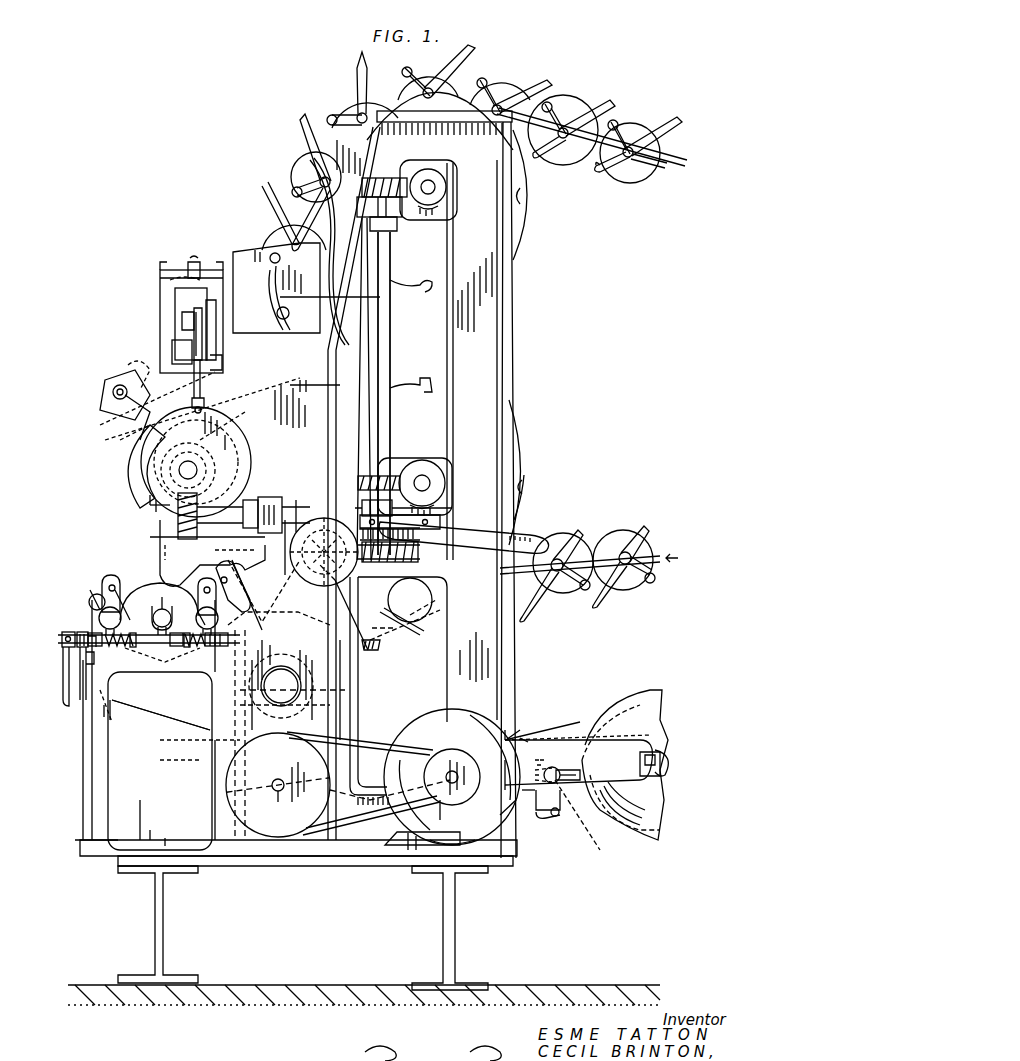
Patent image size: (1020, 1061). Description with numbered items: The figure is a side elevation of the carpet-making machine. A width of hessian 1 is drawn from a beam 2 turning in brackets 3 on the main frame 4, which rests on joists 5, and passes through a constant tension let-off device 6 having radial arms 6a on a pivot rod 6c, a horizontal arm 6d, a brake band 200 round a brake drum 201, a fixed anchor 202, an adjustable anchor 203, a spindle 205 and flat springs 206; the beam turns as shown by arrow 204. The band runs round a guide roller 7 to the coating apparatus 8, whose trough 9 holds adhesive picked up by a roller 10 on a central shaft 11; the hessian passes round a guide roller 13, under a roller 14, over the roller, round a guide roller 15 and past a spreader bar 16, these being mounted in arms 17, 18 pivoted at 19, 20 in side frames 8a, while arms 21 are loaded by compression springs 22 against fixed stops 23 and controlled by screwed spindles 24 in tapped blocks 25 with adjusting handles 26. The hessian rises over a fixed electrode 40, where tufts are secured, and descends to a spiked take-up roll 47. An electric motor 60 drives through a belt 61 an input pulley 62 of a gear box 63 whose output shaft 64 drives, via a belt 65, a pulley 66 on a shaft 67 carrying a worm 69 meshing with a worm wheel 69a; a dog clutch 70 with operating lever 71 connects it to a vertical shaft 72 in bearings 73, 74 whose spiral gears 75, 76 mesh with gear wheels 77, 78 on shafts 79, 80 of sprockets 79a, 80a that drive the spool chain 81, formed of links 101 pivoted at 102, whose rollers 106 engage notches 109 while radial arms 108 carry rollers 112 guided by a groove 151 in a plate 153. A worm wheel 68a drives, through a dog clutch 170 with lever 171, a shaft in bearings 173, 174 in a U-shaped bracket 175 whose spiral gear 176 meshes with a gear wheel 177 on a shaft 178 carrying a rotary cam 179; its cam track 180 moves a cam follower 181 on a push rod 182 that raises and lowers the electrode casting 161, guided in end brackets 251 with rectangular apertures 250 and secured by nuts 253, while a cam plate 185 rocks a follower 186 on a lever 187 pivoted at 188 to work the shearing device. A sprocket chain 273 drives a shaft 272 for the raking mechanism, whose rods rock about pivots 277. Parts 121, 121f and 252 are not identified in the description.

The hessian band 1 is at (92, 473).
The beam 2 is at (160, 630).
The brackets 3 is at (640, 820).
The main frame 4 is at (486, 326).
The joists 5 is at (160, 936).
The constant tension let-off device 6 is at (566, 760).
The radial arm 6a is at (585, 830).
The pivot rod 6c is at (522, 790).
The horizontal arm 6d is at (575, 762).
The guide roller 7 is at (112, 722).
The coating apparatus 8 is at (92, 585).
The side frames 8a is at (158, 624).
The trough 9 is at (156, 660).
The roller 10 is at (140, 590).
The central shaft 11 is at (164, 608).
The guide roller 13 is at (98, 595).
The roller 14 is at (120, 590).
The guide roller 15 is at (222, 553).
The spreader bar 16 is at (236, 578).
The arm 17 is at (122, 595).
The arm 18 is at (240, 596).
The pivot 19 is at (100, 613).
The pivot 20 is at (262, 622).
The arms 21 is at (110, 643).
The compression springs 22 is at (128, 650).
The fixed stops 23 is at (150, 648).
The screwed spindles 24 is at (88, 665).
The tapped blocks 25 is at (93, 633).
The adjusting handles 26 is at (90, 700).
The fixed electrode 40 is at (286, 368).
The take-up roll 47 is at (120, 440).
The electric motor 60 is at (460, 720).
The belt 61 is at (413, 745).
The input pulley 62 is at (245, 798).
The variable speed gear box 63 is at (325, 680).
The output shaft 64 is at (330, 705).
The belt 65 is at (380, 646).
The pulley 66 is at (383, 610).
The shaft 67 is at (405, 618).
The worm wheel 68a is at (362, 468).
The worm 69 is at (286, 472).
The worm wheel 69a is at (425, 556).
The dog clutch 70 is at (420, 535).
The operating lever 71 is at (530, 540).
The vertical shaft 72 is at (383, 345).
The bearing 73 is at (450, 512).
The bearing 74 is at (388, 212).
The spiral gear wheel 75 is at (395, 480).
The spiral gear wheel 76 is at (390, 180).
The gear wheel 77 is at (445, 487).
The gear wheel 78 is at (432, 172).
The shaft 79 is at (432, 482).
The sprocket 79a is at (515, 458).
The shaft 80 is at (433, 187).
The sprocket 80a is at (516, 228).
The spool chain 81 is at (662, 556).
The links 101 is at (596, 165).
The pivots 102 is at (628, 158).
The roller 106 is at (362, 118).
The radial arm 108 is at (630, 125).
The notches 109 is at (520, 200).
The roller 112 is at (550, 127).
The arm 121 is at (652, 135).
The arm 121f is at (282, 195).
The guide groove 151 is at (330, 296).
The plate 153 is at (313, 258).
The casting 161 is at (178, 298).
The dog clutch 170 is at (304, 445).
The lever 171 is at (335, 645).
The bearing 173 is at (165, 540).
The bearing 174 is at (265, 500).
The U-shaped bracket 175 is at (248, 520).
The spiral gear wheel 176 is at (178, 512).
The gear wheel 177 is at (196, 470).
The shaft 178 is at (216, 523).
The rotary cam 179 is at (290, 385).
The cam track 180 is at (130, 478).
The cam follower 181 is at (245, 412).
The push rod 182 is at (192, 258).
The cam plate 185 is at (160, 505).
The rotary follower 186 is at (232, 385).
The lever 187 is at (125, 408).
The pivot 188 is at (215, 362).
The brake band 200 is at (545, 735).
The brake drum 201 is at (650, 830).
The fixed anchor 202 is at (524, 740).
The anchor 203 is at (580, 774).
The arrow 204 is at (636, 690).
The spindle 205 is at (558, 820).
The flat springs 206 is at (537, 805).
The rectangular apertures 250 is at (180, 346).
The end brackets 251 is at (172, 292).
The cap 252 is at (175, 272).
The nuts 253 is at (182, 308).
The shaft 272 is at (110, 390).
The sprocket chain 273 is at (128, 365).
The pivots 277 is at (130, 418).